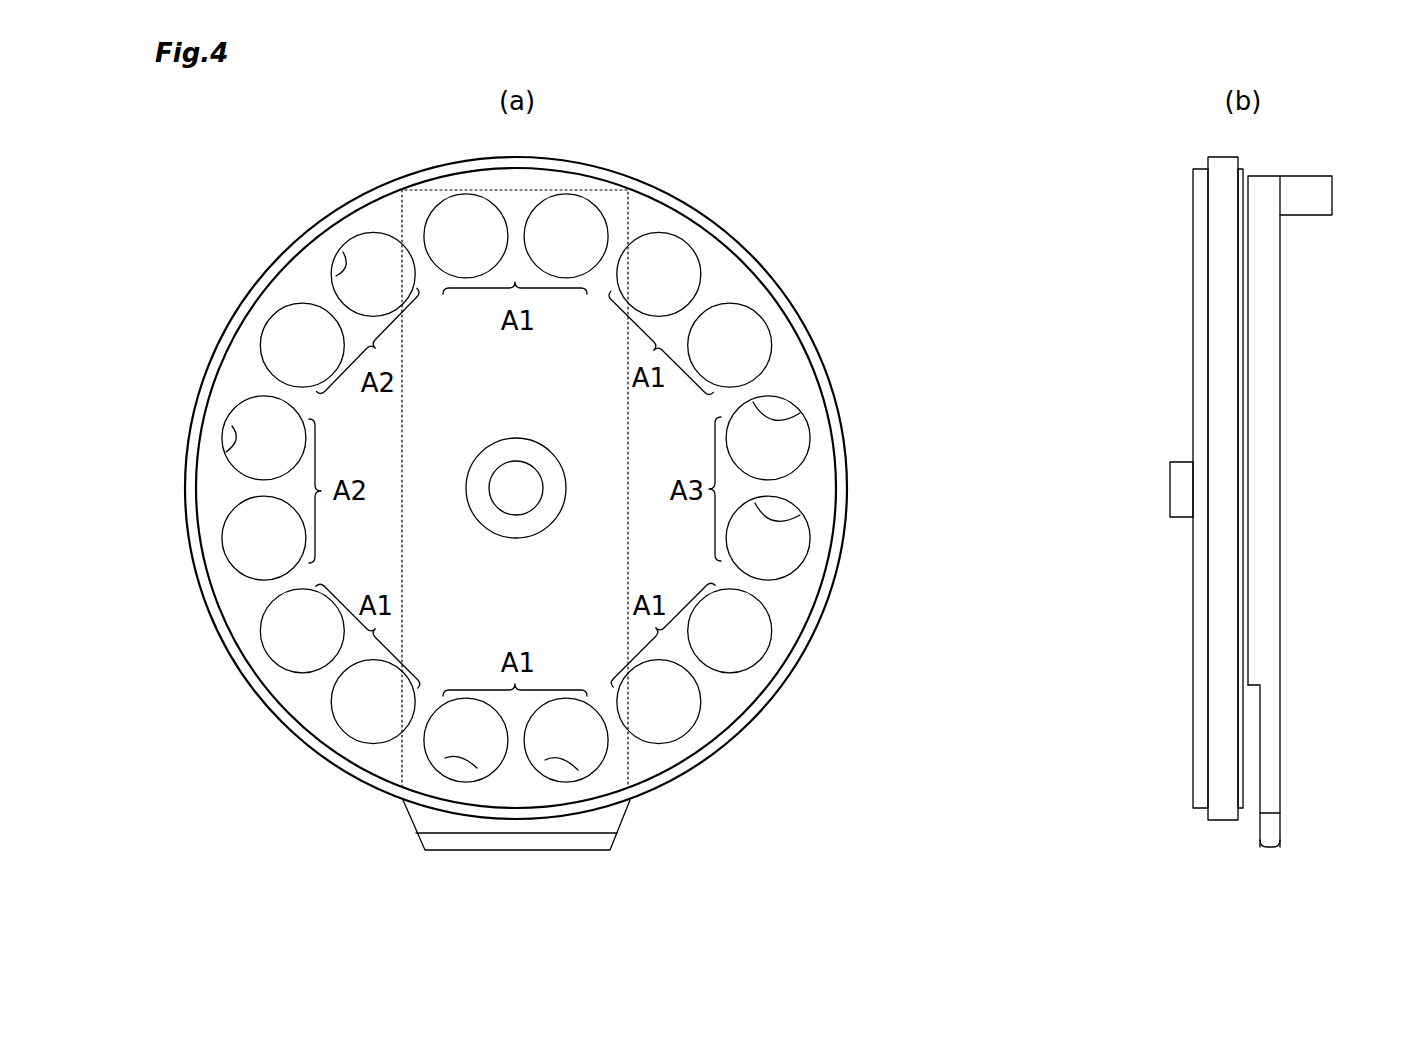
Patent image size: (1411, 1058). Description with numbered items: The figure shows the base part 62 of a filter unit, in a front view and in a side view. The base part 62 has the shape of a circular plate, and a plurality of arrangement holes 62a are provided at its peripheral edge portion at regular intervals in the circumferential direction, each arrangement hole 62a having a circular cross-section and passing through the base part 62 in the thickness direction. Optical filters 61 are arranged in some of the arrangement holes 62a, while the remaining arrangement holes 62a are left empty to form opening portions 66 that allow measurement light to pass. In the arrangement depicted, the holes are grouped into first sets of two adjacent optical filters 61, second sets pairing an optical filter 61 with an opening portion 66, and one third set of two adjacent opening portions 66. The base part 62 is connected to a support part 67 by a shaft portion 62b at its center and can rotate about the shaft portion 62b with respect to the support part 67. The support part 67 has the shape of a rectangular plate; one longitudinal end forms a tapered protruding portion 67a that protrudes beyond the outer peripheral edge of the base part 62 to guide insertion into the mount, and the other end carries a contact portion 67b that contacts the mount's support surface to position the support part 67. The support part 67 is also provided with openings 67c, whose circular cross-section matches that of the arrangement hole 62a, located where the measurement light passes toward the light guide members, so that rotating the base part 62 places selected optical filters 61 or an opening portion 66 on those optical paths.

The optical filter 61 is at (293, 333).
The base part 62 is at (745, 270).
The arrangement hole 62a is at (278, 362).
The shaft portion 62b is at (516, 488).
The opening portion 66 is at (343, 250).
The support part 67 is at (518, 190).
The protruding portion 67a is at (615, 838).
The contact portion 67b is at (1297, 188).
The opening 67c is at (560, 778).